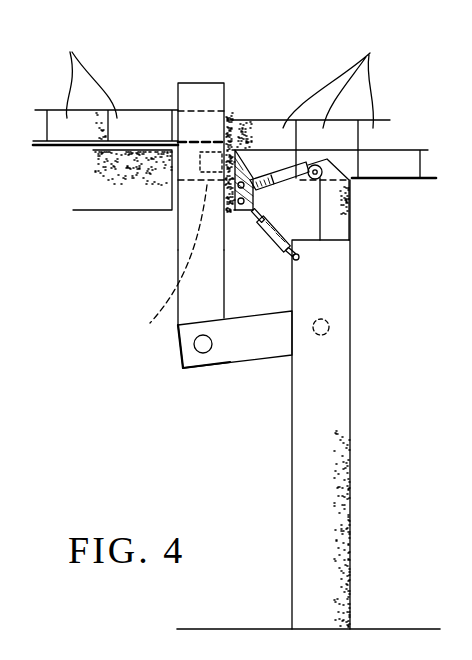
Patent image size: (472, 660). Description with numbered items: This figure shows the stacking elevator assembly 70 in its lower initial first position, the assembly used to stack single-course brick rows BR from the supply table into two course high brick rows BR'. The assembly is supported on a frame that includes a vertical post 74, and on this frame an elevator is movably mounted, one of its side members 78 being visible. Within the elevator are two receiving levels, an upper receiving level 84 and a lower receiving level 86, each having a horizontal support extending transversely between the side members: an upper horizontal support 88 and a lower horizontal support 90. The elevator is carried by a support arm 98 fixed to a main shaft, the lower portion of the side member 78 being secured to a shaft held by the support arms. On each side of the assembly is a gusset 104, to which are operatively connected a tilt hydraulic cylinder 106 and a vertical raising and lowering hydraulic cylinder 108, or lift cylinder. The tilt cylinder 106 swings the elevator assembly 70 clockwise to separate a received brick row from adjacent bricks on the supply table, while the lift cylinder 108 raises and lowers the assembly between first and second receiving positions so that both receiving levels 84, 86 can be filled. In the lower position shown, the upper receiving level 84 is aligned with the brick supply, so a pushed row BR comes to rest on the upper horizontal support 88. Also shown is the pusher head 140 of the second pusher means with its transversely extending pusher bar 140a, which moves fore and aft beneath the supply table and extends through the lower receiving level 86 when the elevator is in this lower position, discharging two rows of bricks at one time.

The stacking elevator assembly 70 is at (262, 68).
The vertical post 74 is at (345, 445).
The side member 78 is at (188, 312).
The upper receiving level 84 is at (200, 100).
The lower receiving level 86 is at (192, 148).
The upper horizontal support 88 is at (190, 142).
The lower horizontal support 90 is at (162, 261).
The support arm 98 is at (247, 357).
The gusset 104 is at (233, 213).
The tilt hydraulic cylinder 106 is at (305, 183).
The vertical raising and lowering hydraulic cylinder 108 is at (300, 232).
The pusher head 140 is at (131, 210).
The pusher bar 140a is at (247, 120).
The brick rows BR is at (91, 77).
The two course high brick rows BR' is at (349, 84).